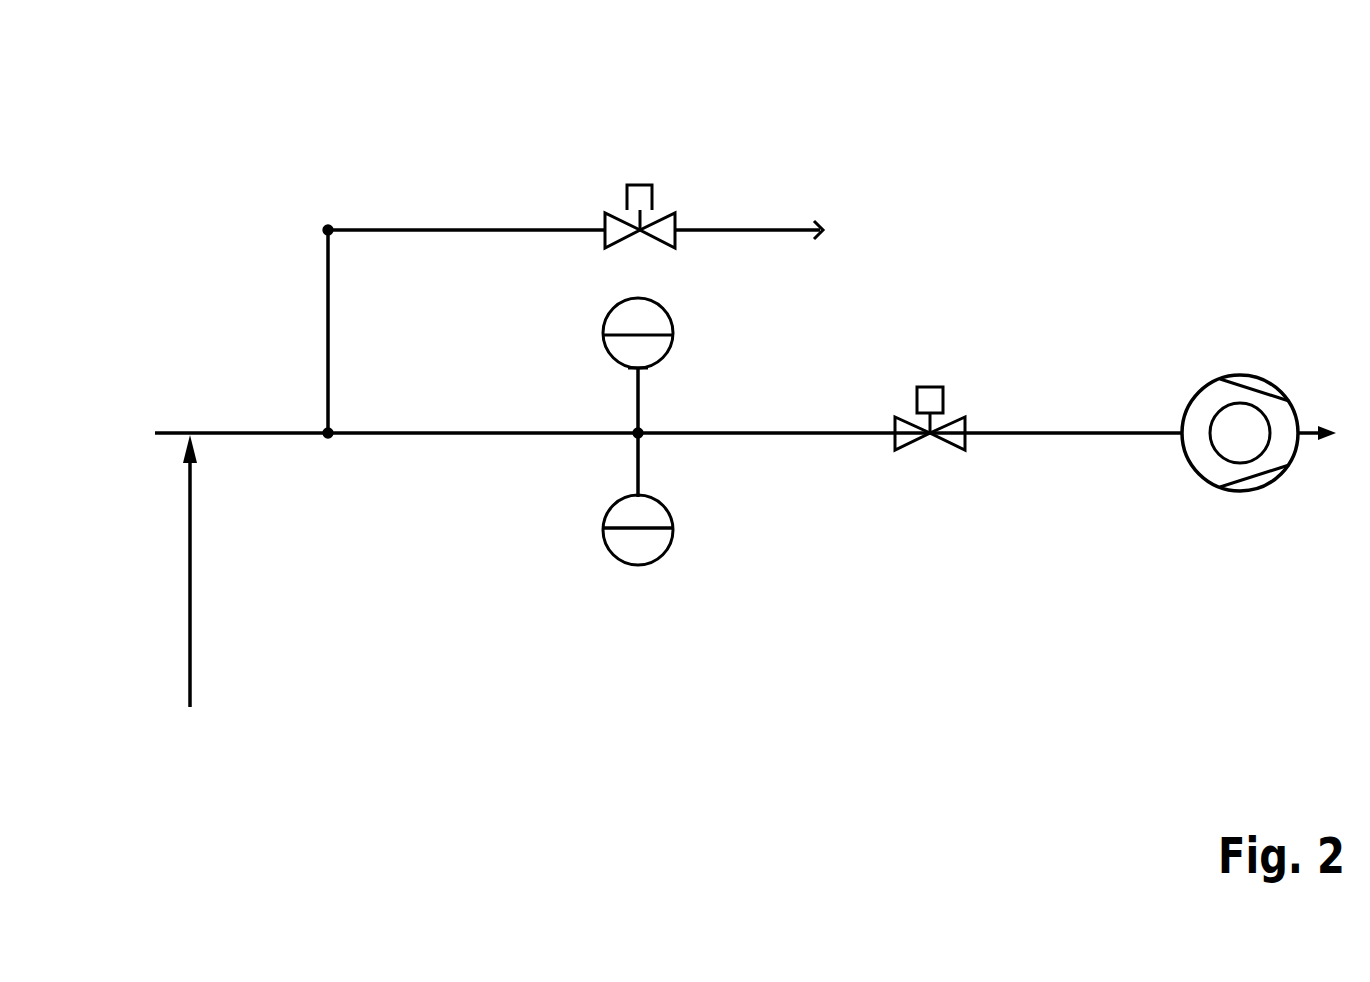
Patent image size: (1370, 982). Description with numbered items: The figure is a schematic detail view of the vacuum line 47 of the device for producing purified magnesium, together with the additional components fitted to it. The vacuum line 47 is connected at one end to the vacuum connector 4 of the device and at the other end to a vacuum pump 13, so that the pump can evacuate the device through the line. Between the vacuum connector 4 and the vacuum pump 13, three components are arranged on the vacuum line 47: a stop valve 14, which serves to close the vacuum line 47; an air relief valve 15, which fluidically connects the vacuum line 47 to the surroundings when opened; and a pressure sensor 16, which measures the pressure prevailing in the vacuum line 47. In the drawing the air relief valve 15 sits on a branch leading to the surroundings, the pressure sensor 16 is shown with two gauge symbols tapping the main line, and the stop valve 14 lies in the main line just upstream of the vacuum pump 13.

The vacuum connector 4 is at (190, 565).
The vacuum pump 13 is at (1220, 513).
The stop valve 14 is at (908, 477).
The air relief valve 15 is at (605, 193).
The pressure sensor 16 is at (605, 368).
The vacuum line 47 is at (272, 433).